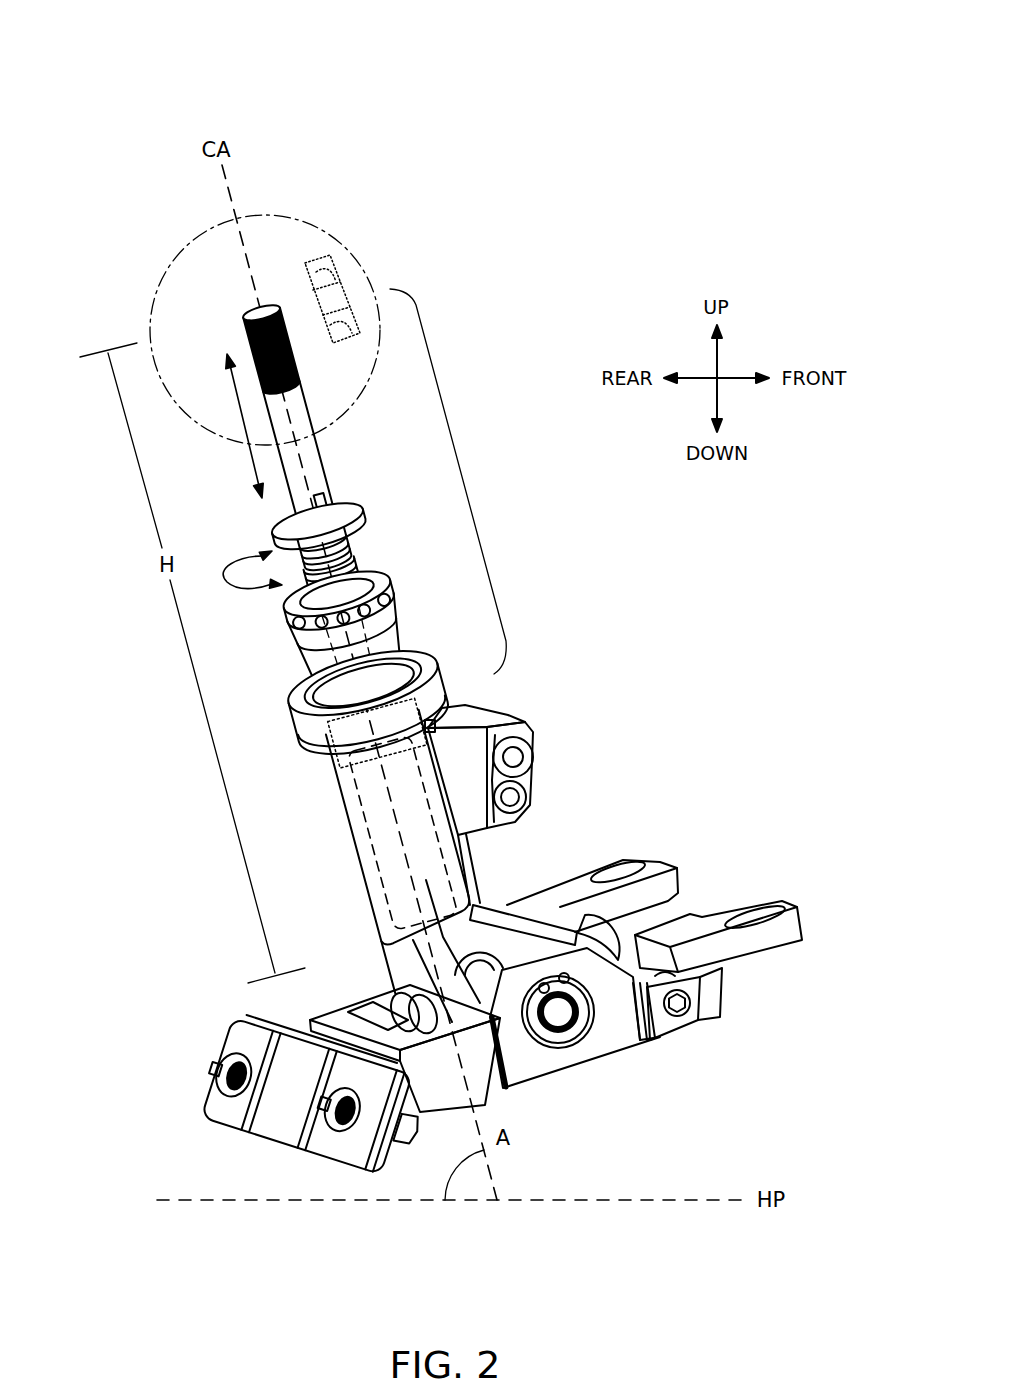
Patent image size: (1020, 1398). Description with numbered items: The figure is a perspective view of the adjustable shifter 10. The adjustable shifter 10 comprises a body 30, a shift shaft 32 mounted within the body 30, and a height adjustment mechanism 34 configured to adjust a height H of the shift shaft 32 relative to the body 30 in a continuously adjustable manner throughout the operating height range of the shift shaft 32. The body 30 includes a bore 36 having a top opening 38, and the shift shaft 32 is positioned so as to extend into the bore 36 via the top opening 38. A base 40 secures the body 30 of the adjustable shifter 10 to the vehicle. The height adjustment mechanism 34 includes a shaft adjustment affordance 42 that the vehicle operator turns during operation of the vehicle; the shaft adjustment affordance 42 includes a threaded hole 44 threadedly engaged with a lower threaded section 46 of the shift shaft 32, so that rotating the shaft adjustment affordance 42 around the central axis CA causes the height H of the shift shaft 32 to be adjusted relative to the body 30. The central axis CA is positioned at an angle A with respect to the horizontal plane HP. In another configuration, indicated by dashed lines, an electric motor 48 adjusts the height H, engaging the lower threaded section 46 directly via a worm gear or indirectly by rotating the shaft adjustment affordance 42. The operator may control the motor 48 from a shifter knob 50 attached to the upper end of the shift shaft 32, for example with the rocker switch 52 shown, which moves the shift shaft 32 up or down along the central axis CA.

The adjustable shifter 10 is at (746, 56).
The body 30 is at (355, 867).
The shift shaft 32 is at (317, 433).
The height adjustment mechanism 34 is at (466, 477).
The bore 36 is at (338, 802).
The top opening 38 is at (300, 670).
The base 40 is at (569, 838).
The shaft adjustment affordance 42 is at (385, 598).
The threaded hole 44 is at (403, 643).
The lower threaded section 46 is at (347, 565).
The electric motor 48 is at (338, 749).
The shifter knob 50 is at (288, 215).
The rocker switch 52 is at (333, 241).